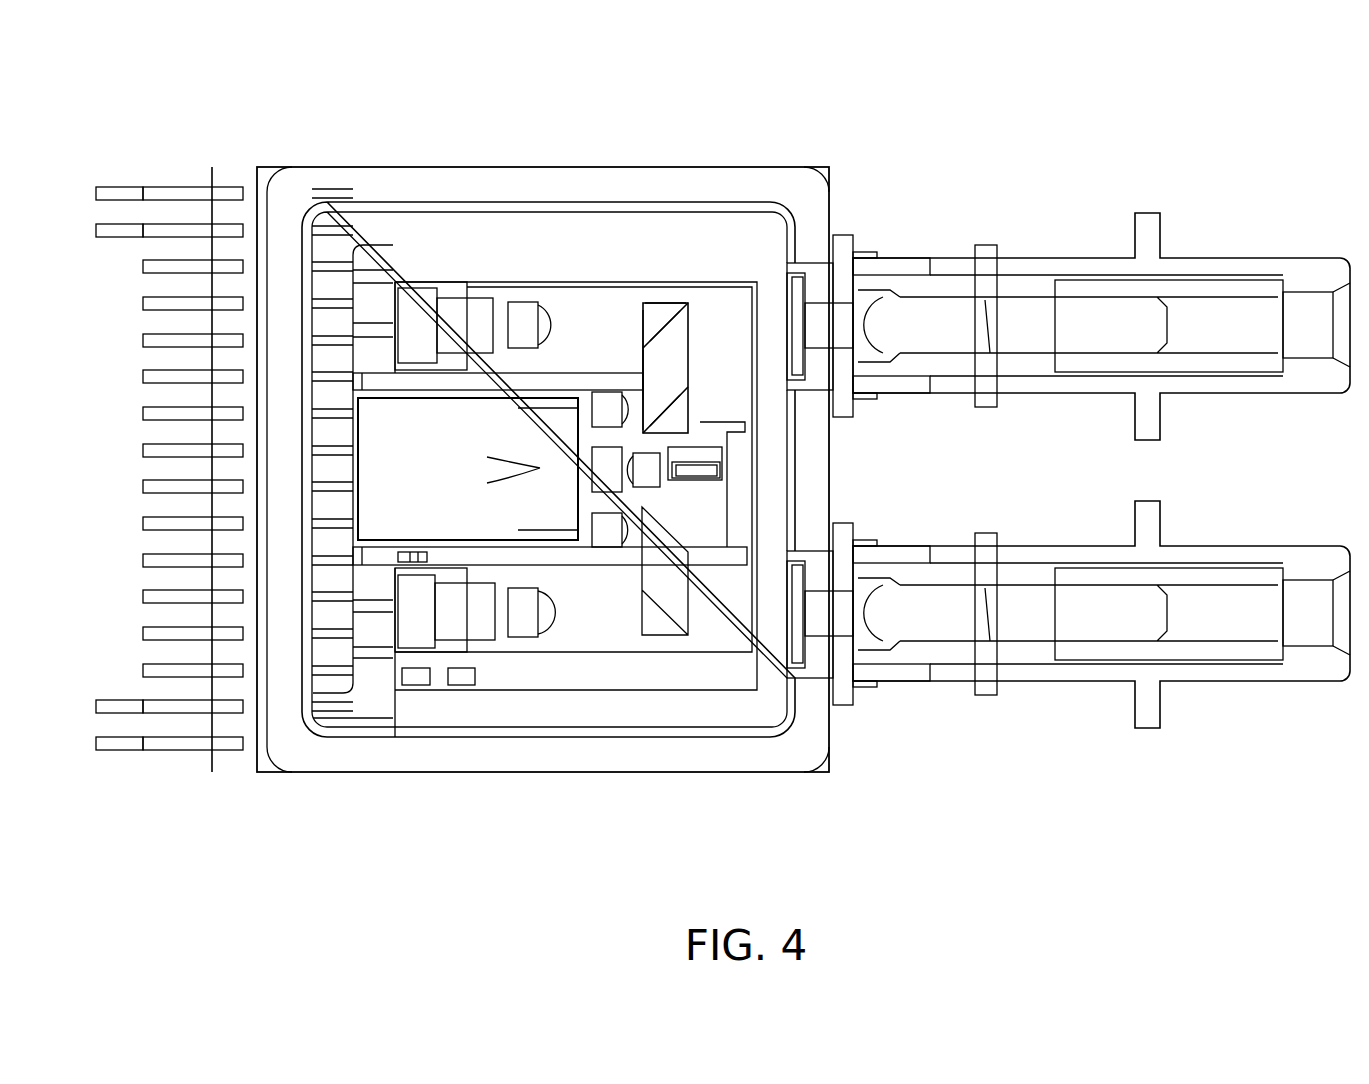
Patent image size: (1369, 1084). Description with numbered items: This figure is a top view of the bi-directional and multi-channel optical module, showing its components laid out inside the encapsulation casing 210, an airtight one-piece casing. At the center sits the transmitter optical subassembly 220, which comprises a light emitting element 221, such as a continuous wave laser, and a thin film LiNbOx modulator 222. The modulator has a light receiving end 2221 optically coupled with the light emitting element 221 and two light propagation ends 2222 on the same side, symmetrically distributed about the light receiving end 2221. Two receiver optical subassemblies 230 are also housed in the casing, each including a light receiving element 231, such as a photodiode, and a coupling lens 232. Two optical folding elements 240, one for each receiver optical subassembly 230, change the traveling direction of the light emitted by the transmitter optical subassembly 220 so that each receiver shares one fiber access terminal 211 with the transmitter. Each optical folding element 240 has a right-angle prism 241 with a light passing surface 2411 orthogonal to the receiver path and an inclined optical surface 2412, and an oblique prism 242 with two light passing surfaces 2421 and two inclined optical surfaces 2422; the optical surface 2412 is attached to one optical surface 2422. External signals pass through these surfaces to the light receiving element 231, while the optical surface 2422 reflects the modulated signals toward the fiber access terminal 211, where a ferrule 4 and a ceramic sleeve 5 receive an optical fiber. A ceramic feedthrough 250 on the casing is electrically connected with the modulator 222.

The ferrule 4 is at (1078, 323).
The ceramic sleeve 5 is at (1216, 267).
The encapsulation casing 210 is at (345, 772).
The fiber access terminal 211 is at (797, 325).
The transmitter optical subassembly 220 is at (540, 858).
The light emitting element 221 is at (697, 472).
The thin film LiNbOx modulator 222 is at (468, 498).
The light receiving end 2221 is at (540, 468).
The light propagation end 2222 is at (583, 403).
The receiver optical subassembly 230 is at (357, 112).
The light receiving element 231 is at (452, 323).
The coupling lens 232 is at (520, 320).
The optical folding element 240 is at (648, 90).
The right-angle prism 241 is at (667, 300).
The light passing surface 2411 is at (643, 335).
The optical surface 2412 is at (648, 304).
The oblique prism 242 is at (684, 342).
The light passing surface 2421 is at (643, 403).
The optical surface 2422 is at (655, 322).
The ceramic feedthrough 250 is at (143, 415).